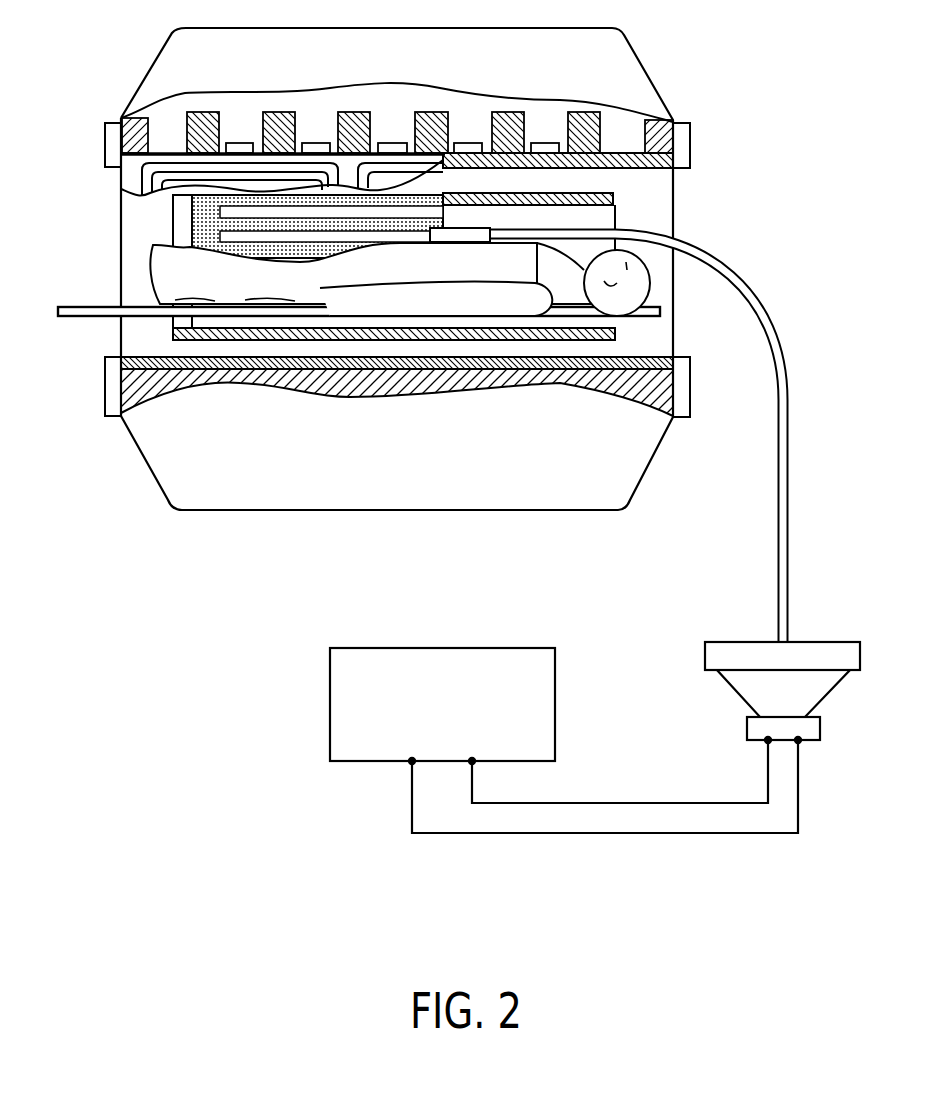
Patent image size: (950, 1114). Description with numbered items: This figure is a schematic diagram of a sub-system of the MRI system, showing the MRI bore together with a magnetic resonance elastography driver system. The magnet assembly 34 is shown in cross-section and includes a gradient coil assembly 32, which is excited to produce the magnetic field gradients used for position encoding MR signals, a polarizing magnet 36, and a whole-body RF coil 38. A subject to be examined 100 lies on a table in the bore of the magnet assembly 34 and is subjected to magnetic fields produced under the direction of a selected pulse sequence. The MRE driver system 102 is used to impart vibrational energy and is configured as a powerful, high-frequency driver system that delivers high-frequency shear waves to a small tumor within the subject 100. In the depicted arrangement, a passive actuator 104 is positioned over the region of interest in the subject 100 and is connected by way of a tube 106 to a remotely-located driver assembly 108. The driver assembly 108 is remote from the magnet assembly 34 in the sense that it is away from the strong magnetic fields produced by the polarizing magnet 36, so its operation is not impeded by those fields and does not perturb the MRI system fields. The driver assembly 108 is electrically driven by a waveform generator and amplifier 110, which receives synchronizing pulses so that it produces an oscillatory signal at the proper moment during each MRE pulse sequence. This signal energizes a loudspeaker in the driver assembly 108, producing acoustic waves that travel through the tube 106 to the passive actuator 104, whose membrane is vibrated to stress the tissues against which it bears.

The gradient coil assembly 32 is at (128, 167).
The magnet assembly 34 is at (130, 60).
The polarizing magnet 36 is at (346, 112).
The whole-body RF coil 38 is at (573, 207).
The subject to be examined 100 is at (443, 278).
The MRE driver system 102 is at (718, 212).
The passive actuator 104 is at (466, 228).
The tube 106 is at (772, 290).
The driver assembly 108 is at (688, 650).
The waveform generator and amplifier 110 is at (443, 648).